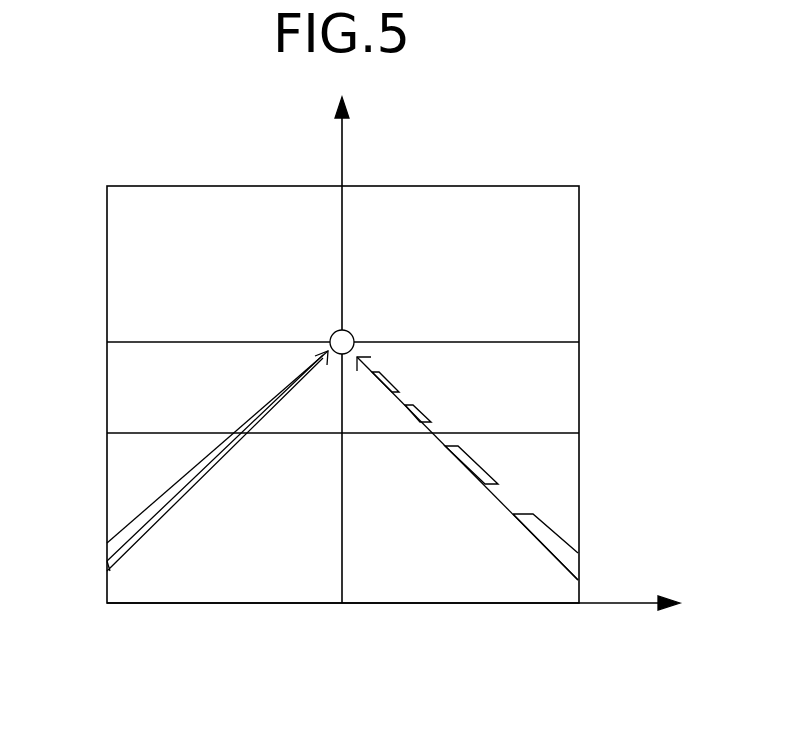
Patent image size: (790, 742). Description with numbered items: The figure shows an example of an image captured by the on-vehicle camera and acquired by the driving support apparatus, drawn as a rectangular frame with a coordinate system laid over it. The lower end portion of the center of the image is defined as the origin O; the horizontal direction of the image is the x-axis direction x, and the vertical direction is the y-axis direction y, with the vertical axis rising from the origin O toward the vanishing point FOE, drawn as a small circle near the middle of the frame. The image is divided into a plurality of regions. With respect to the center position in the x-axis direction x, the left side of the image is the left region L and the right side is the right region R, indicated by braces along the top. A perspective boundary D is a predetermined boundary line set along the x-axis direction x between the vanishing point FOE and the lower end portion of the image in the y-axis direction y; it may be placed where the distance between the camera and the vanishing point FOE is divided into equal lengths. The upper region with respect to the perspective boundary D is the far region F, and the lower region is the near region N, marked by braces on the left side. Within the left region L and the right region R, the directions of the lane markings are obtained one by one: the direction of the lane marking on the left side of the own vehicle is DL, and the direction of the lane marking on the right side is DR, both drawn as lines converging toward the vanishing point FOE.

The vanishing point FOE is at (338, 330).
The left region L is at (342, 340).
The right region R is at (579, 340).
The far region F is at (107, 342).
The near region N is at (107, 433).
The perspective boundary D is at (568, 433).
The direction of the lane marking on the left side DL is at (122, 560).
The direction of the lane marking on the right side DR is at (503, 510).
The origin O is at (322, 632).
The x-axis direction x is at (393, 585).
The y-axis direction y is at (362, 350).